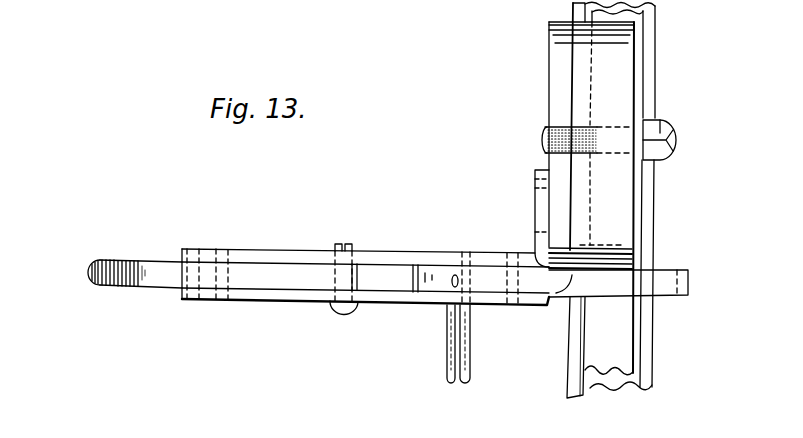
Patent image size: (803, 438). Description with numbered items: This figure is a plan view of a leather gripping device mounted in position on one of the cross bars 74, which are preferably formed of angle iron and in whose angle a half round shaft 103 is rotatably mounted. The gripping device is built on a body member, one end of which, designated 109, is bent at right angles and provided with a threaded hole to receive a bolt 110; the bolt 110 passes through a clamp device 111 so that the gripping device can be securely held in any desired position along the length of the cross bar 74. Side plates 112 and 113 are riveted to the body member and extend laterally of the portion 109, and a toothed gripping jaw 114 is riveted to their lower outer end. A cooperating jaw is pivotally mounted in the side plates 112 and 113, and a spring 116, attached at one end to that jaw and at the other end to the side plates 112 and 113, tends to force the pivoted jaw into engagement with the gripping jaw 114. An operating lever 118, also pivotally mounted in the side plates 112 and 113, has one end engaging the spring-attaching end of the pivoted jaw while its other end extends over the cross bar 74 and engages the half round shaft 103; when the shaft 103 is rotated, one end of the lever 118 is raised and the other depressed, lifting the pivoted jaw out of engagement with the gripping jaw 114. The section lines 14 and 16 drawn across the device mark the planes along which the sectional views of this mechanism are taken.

The cross bar 74 is at (573, 347).
The half round shaft 103 is at (620, 337).
The bent end of body member 109 is at (558, 92).
The bolt 110 is at (667, 125).
The clamp device 111 is at (608, 62).
The side plate 112 is at (291, 298).
The side plate 113 is at (303, 252).
The toothed gripping jaw 114 is at (101, 288).
The spring 116 is at (447, 371).
The operating lever 118 is at (668, 279).
The section line 14- 14 is at (92, 283).
The section line 16- 16 is at (452, 253).